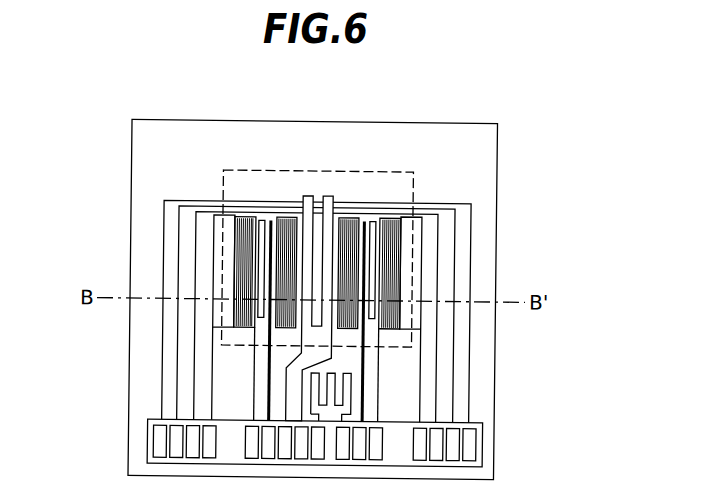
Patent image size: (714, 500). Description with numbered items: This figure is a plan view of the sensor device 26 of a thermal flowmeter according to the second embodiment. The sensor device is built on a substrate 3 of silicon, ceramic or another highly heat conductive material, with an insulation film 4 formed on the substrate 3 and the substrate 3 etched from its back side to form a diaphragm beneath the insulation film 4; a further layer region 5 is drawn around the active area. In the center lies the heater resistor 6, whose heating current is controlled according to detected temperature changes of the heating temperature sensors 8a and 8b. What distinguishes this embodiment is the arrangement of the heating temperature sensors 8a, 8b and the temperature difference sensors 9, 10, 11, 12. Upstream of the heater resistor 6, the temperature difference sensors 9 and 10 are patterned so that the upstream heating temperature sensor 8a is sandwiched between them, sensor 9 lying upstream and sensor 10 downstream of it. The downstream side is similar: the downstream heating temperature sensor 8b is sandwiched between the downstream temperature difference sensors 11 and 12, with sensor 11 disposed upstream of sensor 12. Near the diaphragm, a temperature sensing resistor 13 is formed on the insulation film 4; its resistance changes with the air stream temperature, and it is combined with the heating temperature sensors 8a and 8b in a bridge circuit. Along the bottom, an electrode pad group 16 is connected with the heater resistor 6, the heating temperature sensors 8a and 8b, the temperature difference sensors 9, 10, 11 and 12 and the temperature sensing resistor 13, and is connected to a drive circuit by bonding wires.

The sensor device 26 is at (150, 121).
The substrate 3 is at (143, 161).
The insulation film 4 is at (143, 193).
The third ring region 5 is at (143, 225).
The heater resistor 6 is at (328, 196).
The temperature difference sensor 9 is at (242, 201).
The temperature difference sensor 10 is at (283, 201).
The temperature difference sensor 11 is at (350, 201).
The temperature difference sensor 12 is at (393, 201).
The upstream heating temperature sensor 8a is at (261, 318).
The downstream heating temperature sensor 8b is at (372, 318).
The temperature sensing resistor 13 is at (352, 396).
The electrode pad group 16 is at (155, 440).